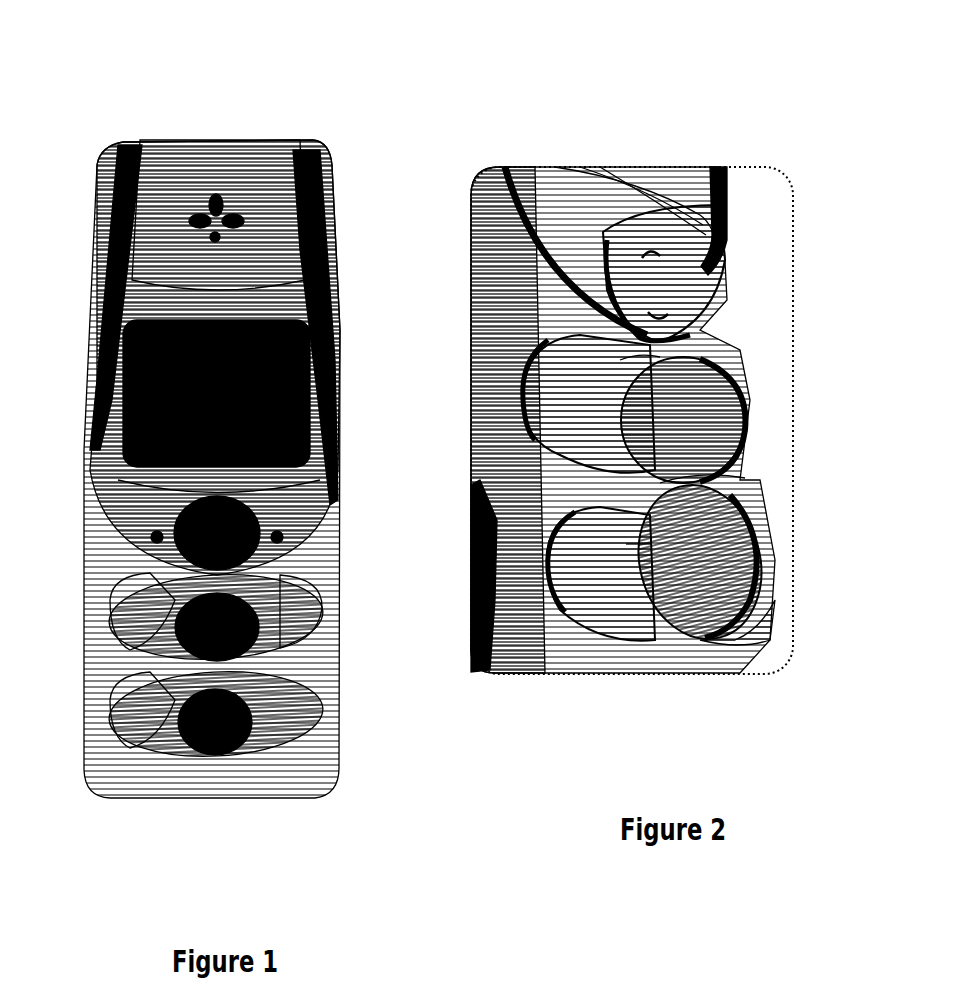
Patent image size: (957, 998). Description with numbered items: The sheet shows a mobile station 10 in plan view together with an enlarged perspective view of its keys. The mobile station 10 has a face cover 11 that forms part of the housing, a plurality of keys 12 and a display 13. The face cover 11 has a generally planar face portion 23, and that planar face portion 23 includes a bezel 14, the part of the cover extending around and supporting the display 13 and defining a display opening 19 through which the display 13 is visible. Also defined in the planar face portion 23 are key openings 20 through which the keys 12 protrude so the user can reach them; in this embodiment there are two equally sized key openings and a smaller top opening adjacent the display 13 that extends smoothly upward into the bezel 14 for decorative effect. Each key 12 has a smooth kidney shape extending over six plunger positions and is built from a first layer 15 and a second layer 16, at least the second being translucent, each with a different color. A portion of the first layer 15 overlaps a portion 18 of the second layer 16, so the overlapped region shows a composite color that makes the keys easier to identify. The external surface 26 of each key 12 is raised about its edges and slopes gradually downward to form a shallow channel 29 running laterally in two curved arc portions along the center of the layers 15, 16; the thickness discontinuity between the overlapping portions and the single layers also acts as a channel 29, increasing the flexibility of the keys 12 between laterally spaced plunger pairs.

In FIG. 1, the mobile station 10 is at (231, 116).
In FIG. 1, the face cover 11 is at (272, 178).
In FIG. 2, the face cover 11 is at (717, 333).
In FIG. 1, the keys 12 is at (305, 600).
In FIG. 2, the keys 12 is at (710, 283).
In FIG. 1, the display 13 is at (283, 412).
In FIG. 2, the display 13 is at (668, 195).
In FIG. 1, the bezel 14 is at (303, 272).
In FIG. 1, the first layer 15 is at (148, 637).
In FIG. 2, the first layer 15 is at (555, 545).
In FIG. 1, the second layer 16 is at (310, 630).
In FIG. 2, the second layer 16 is at (733, 577).
In FIG. 1, the portion of the second layer 18 is at (205, 527).
In FIG. 2, the portion of the second layer 18 is at (655, 352).
In FIG. 1, the display opening 19 is at (305, 328).
In FIG. 1, the key openings 20 is at (300, 738).
In FIG. 2, the key openings 20 is at (717, 467).
In FIG. 1, the planar face portion 23 is at (186, 183).
In FIG. 2, the planar face portion 23 is at (548, 311).
In FIG. 2, the external surface 26 is at (642, 277).
In FIG. 1, the channel 29 is at (140, 727).
In FIG. 2, the channel 29 is at (600, 570).